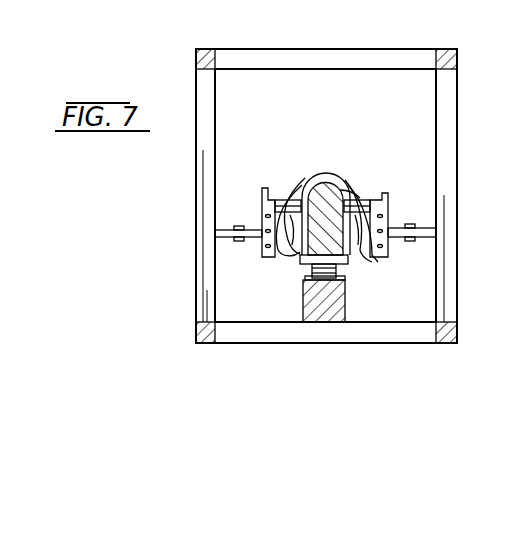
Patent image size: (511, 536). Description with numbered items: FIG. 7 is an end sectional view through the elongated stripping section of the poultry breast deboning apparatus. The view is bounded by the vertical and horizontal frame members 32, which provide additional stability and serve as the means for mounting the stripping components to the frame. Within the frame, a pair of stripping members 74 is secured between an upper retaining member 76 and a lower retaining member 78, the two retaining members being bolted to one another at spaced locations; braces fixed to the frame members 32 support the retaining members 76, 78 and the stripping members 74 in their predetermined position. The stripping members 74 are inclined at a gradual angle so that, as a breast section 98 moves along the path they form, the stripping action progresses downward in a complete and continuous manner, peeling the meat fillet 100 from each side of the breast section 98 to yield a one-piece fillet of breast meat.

The frame members 32 is at (344, 49).
The stripping members 74 is at (300, 205).
The upper retaining member 76 is at (262, 195).
The lower retaining member 78 is at (392, 197).
The breast section 98 is at (335, 178).
The meat fillet 100 is at (272, 255).